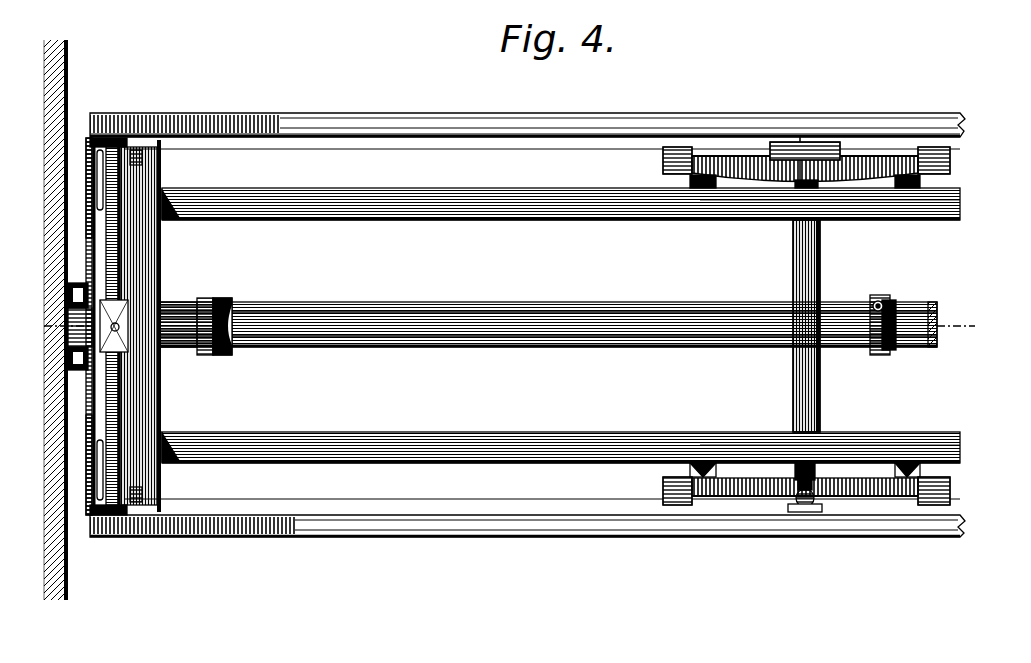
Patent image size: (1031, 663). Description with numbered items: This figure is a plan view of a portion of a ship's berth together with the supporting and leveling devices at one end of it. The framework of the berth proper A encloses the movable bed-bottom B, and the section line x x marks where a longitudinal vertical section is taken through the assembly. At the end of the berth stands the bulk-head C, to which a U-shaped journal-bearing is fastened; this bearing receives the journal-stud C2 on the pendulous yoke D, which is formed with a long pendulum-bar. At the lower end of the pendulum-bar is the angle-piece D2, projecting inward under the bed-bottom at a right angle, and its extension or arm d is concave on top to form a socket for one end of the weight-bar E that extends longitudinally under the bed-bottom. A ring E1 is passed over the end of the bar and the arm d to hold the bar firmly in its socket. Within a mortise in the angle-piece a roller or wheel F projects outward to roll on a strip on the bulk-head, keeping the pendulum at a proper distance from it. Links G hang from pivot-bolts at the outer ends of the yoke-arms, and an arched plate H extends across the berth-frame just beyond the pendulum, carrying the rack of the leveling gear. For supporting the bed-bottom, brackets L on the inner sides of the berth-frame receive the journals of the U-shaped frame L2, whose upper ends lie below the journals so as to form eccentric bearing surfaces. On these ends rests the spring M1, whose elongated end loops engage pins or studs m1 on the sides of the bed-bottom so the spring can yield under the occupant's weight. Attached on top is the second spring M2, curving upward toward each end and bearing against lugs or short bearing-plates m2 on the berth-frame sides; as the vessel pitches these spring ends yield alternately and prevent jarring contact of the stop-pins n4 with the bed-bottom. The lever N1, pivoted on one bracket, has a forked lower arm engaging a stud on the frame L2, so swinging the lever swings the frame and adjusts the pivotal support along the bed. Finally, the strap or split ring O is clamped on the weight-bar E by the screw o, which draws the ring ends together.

The framework of the berth A is at (383, 113).
The bed-bottom B is at (168, 243).
The bulk-head C is at (68, 257).
The journal-stud C2 is at (68, 362).
The pendulous yoke D is at (120, 412).
The angle-piece D2 is at (160, 373).
The weight-bar E is at (542, 305).
The ring E1 is at (228, 358).
The roller or wheel F is at (178, 309).
The links G is at (88, 178).
The arched plate H is at (90, 441).
The brackets L is at (798, 137).
The U-shaped frame L2 is at (793, 396).
The spring M1 is at (805, 326).
The second spring M2 is at (778, 222).
The lever N1 is at (818, 495).
The strap or split ring O is at (878, 355).
The extension or arm d is at (232, 302).
The pins or studs m1 is at (695, 158).
The lugs or short bearing-plates m2 is at (663, 162).
The stop-pins n4 is at (143, 156).
The screw o is at (882, 302).
The section line x x is at (505, 327).